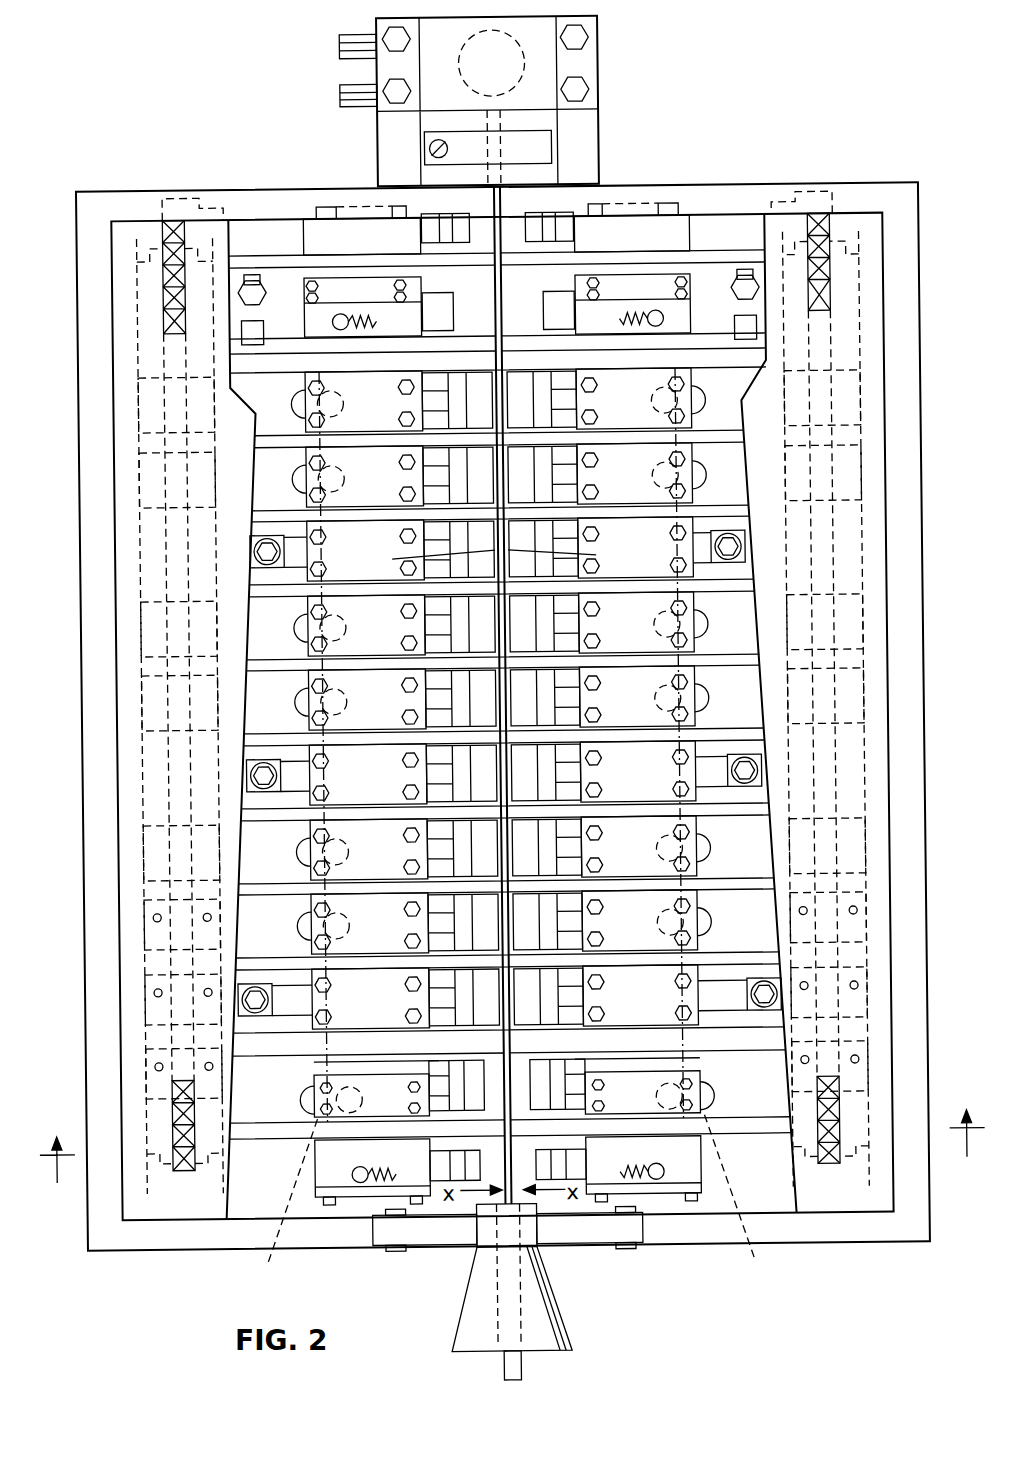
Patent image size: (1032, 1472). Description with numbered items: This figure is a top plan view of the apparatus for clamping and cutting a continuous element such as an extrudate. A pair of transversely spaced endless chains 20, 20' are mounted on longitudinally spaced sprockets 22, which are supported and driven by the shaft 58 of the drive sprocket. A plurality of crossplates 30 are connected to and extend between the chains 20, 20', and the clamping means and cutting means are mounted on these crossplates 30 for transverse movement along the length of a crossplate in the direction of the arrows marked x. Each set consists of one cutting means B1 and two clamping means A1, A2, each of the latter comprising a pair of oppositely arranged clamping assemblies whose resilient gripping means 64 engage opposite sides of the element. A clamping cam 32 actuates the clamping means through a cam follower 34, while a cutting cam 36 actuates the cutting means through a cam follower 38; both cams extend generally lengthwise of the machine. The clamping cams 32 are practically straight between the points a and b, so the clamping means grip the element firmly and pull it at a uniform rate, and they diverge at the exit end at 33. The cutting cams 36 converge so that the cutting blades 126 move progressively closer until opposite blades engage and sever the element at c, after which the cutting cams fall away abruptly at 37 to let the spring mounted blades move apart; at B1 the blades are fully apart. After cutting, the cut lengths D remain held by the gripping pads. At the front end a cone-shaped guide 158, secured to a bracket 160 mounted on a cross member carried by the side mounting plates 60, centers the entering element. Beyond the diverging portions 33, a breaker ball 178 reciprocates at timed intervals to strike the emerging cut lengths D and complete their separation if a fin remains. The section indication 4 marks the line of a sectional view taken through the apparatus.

The breaker ball 178 is at (527, 70).
The diverging portions of the clamping cams 33 is at (305, 298).
The sprockets 22 is at (165, 285).
The fall-away portions of the cutting cams 37 is at (233, 412).
The cutting cam 36 is at (742, 405).
The crossplates 30 is at (140, 484).
The cam follower 38 is at (268, 535).
The cutting blade 126 is at (496, 555).
The resilient gripping means 64 is at (486, 614).
The endless chain 20 is at (519, 716).
The endless chain 20' is at (461, 717).
The clamping cam 32 is at (684, 740).
The side mounting plates 60 is at (100, 902).
The shaft 58 is at (733, 1110).
The cam follower 34 is at (367, 1129).
The bracket 160 is at (434, 1236).
The guide 158 is at (534, 1320).
The section line 4- 4 is at (513, 1160).
The point b is at (349, 383).
The cut lengths D is at (585, 460).
The point c is at (525, 535).
The clamping means A2 is at (393, 859).
The clamping means A1 is at (392, 933).
The point a is at (367, 951).
The cutting means B1 is at (382, 1006).